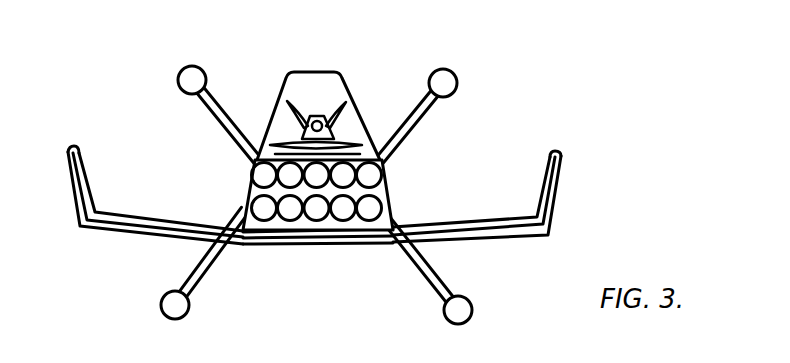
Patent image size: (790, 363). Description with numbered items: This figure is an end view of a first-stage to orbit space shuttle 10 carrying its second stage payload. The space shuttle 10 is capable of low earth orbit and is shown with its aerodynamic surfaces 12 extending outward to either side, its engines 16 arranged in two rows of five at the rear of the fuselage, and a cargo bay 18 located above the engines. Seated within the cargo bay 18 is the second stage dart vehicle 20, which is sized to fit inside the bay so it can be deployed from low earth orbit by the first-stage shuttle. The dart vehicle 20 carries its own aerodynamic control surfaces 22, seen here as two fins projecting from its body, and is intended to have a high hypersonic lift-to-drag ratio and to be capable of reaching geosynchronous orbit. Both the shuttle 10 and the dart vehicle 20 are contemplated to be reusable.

The first-stage to orbit space shuttle 10 is at (319, 70).
The aerodynamic surfaces 12 is at (116, 237).
The engines 16 is at (312, 217).
The cargo bay 18 is at (332, 89).
The second stage dart vehicle 20 is at (293, 130).
The aerodynamic control surfaces 22 is at (348, 137).